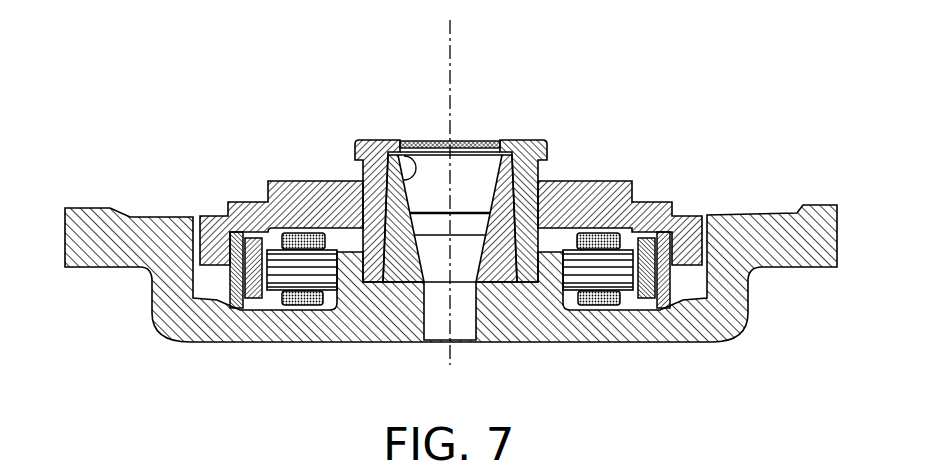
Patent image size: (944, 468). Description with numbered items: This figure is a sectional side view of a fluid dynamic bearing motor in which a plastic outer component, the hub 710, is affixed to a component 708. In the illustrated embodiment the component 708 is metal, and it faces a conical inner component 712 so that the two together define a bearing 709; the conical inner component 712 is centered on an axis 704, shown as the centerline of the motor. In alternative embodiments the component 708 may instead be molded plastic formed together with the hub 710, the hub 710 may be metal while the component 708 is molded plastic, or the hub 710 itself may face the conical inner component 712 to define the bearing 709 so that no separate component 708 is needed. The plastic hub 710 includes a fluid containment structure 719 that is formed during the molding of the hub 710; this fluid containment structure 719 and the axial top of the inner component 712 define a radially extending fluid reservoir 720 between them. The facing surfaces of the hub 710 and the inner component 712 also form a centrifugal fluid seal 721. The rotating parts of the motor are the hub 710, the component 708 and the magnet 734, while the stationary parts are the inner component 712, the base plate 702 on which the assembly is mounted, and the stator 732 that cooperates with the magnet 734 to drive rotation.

The base plate 702 is at (532, 330).
The axis 704 is at (447, 80).
The component 708 is at (549, 160).
The bearing 709 is at (407, 143).
The hub 710 is at (633, 182).
The conical inner component 712 is at (491, 186).
The fluid containment structure 719 is at (473, 143).
The fluid reservoir 720 is at (493, 143).
The centrifugal fluid seal 721 is at (430, 142).
The stator 732 is at (600, 300).
The magnet 734 is at (655, 313).